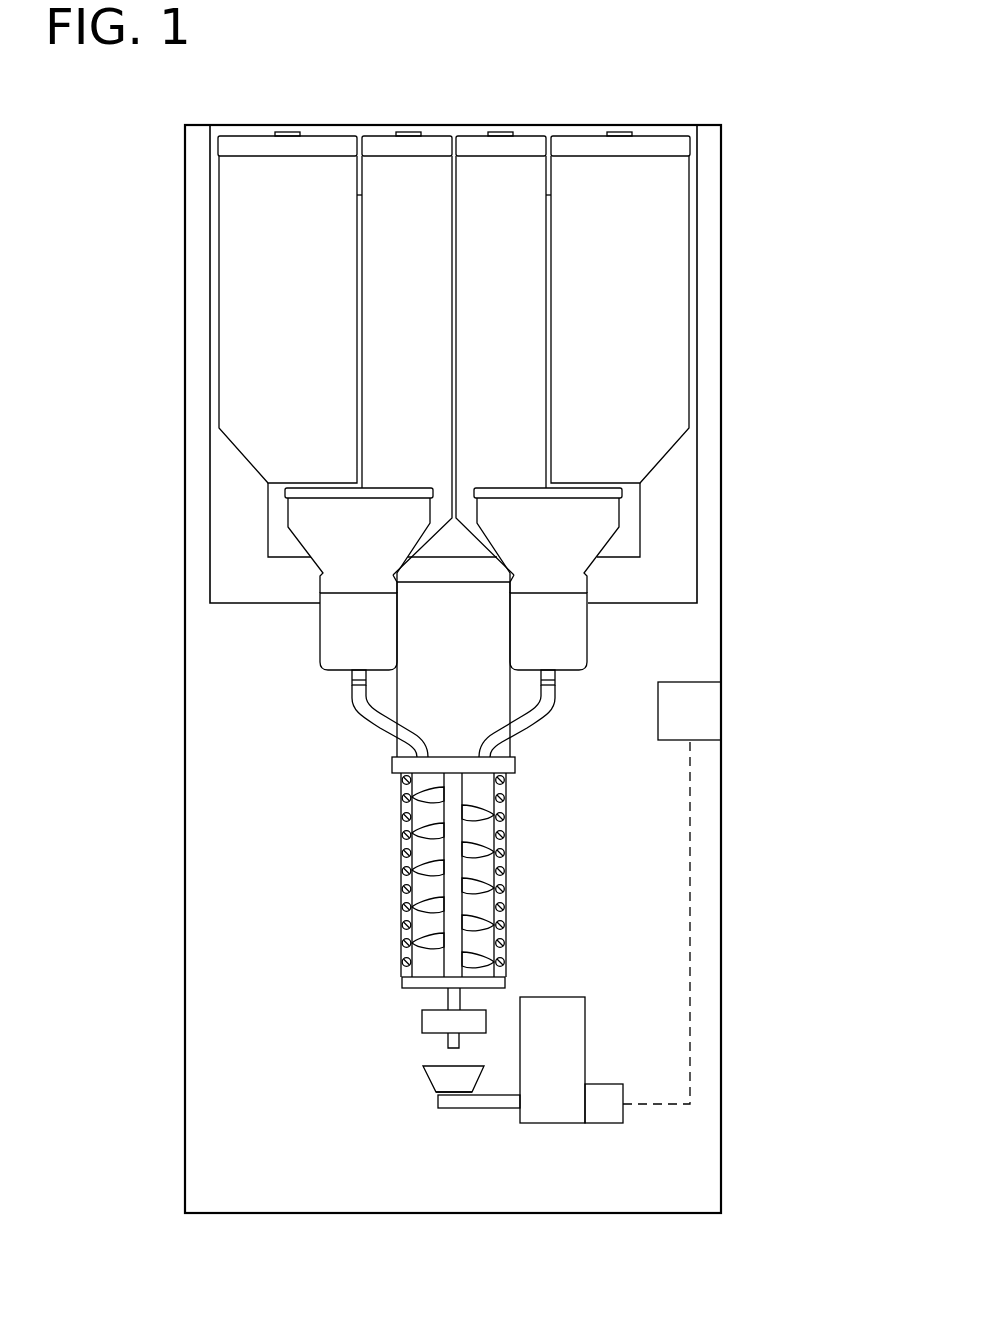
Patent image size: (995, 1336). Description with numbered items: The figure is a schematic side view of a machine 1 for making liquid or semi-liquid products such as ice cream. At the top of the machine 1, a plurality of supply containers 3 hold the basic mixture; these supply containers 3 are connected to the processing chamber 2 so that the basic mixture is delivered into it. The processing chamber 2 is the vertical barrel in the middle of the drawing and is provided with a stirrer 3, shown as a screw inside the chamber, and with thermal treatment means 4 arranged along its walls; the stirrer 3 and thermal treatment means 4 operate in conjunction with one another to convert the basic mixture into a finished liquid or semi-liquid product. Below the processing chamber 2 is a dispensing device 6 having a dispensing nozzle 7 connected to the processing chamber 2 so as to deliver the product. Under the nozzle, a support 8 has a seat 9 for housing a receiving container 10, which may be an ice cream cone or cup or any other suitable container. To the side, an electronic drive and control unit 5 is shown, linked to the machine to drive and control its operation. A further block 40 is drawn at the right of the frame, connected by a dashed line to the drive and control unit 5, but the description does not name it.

The machine 1 is at (782, 142).
The processing chamber 2 is at (515, 831).
The stirrer / supply containers 3 is at (292, 294).
The thermal treatment means 4 is at (398, 806).
The electronic drive and control unit 5 is at (605, 1125).
The dispensing device 6 is at (418, 1023).
The dispensing nozzle 7 is at (445, 1041).
The support 8 is at (457, 1112).
The seat 9 is at (489, 1080).
The receiving container 10 is at (424, 1079).
The control unit 40 is at (713, 714).